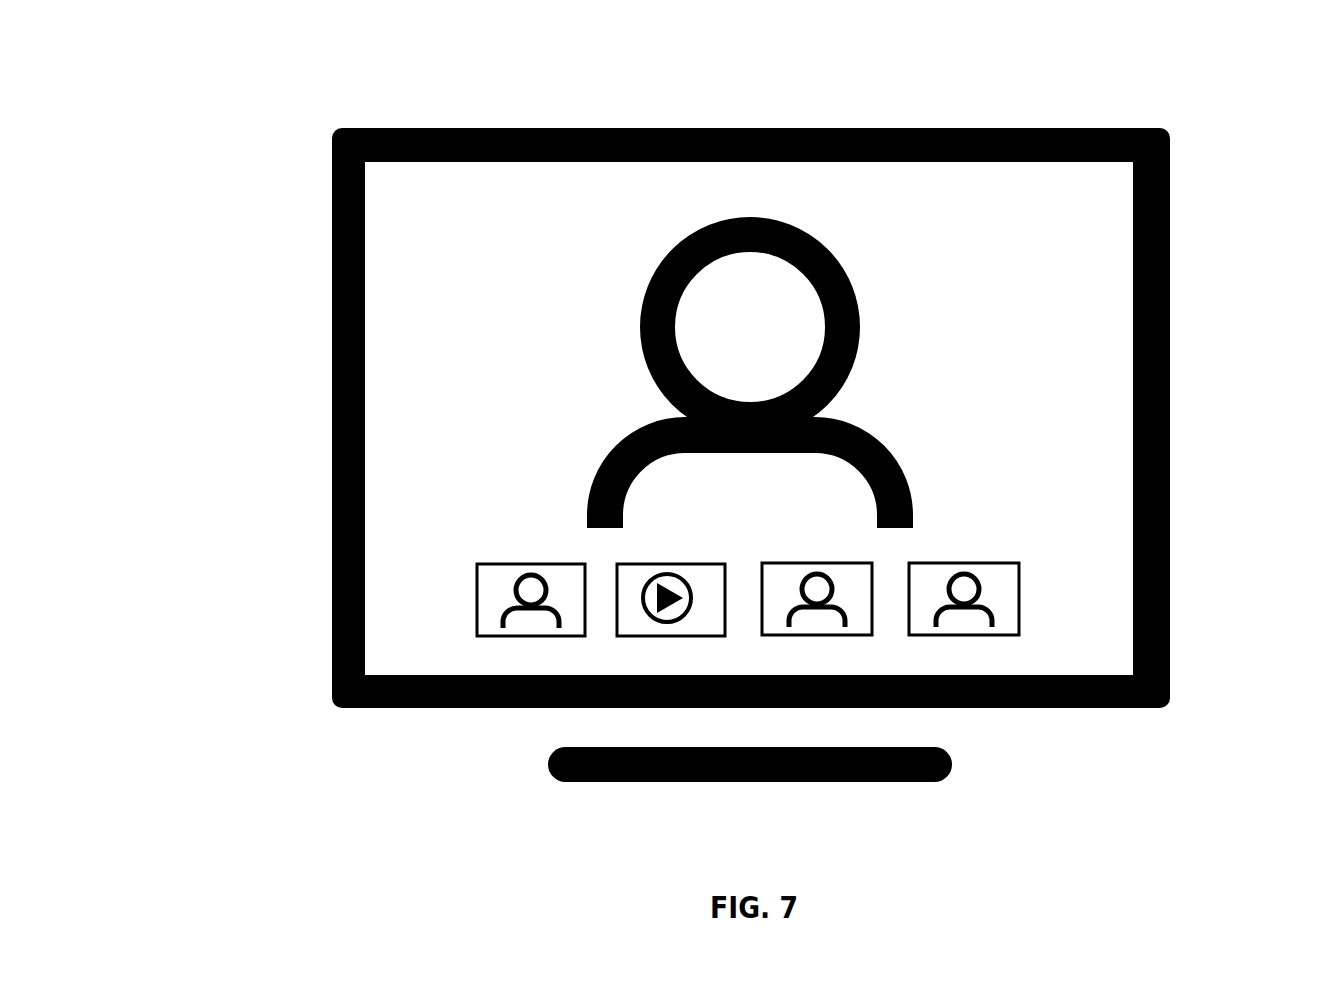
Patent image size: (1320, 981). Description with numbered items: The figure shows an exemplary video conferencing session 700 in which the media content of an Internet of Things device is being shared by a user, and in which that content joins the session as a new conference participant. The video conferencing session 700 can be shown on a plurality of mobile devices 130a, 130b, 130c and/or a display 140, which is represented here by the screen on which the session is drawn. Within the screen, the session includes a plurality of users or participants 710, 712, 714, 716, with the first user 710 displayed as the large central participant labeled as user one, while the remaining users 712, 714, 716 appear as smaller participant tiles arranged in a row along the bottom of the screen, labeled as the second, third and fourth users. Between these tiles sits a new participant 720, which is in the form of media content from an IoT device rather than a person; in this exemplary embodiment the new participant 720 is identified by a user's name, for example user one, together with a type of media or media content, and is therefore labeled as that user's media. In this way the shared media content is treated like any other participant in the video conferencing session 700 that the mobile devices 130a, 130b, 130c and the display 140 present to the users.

The video conferencing session 700 is at (1306, 84).
The mobile device 130a is at (364, 111).
The mobile device 130b is at (751, 455).
The mobile device 130c is at (751, 455).
The display 140 is at (751, 455).
The user 710 is at (572, 319).
The user 712 is at (529, 556).
The new participant 720 is at (673, 556).
The user 714 is at (808, 557).
The user 716 is at (958, 552).